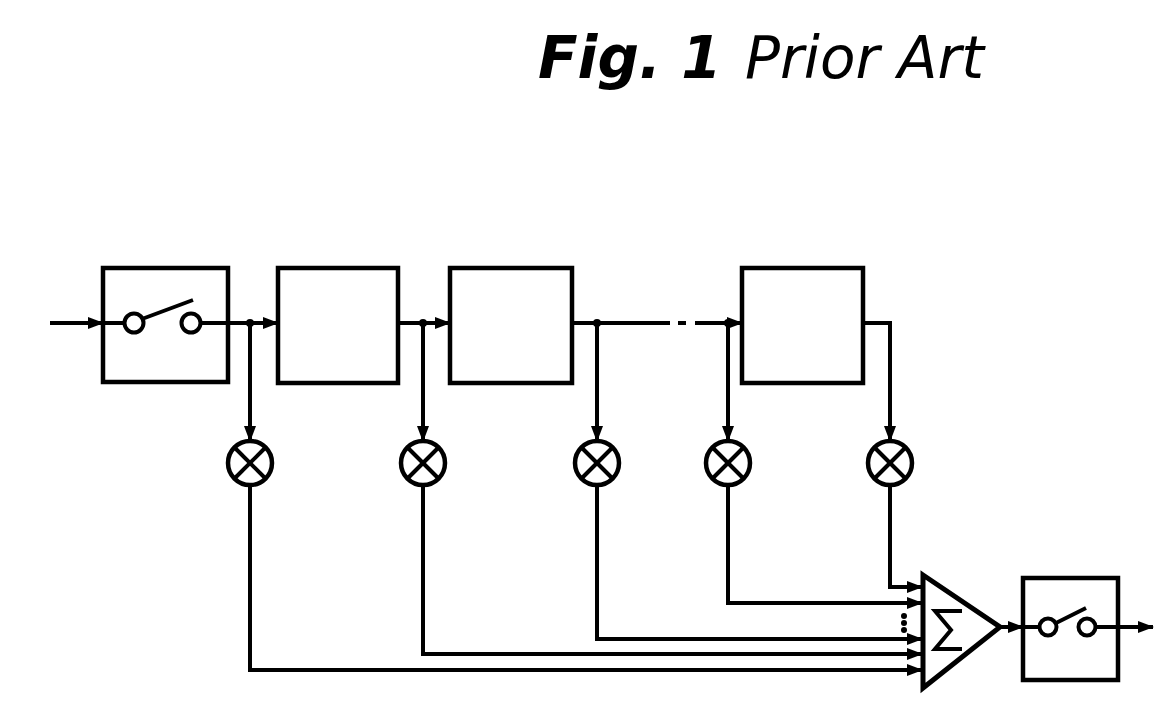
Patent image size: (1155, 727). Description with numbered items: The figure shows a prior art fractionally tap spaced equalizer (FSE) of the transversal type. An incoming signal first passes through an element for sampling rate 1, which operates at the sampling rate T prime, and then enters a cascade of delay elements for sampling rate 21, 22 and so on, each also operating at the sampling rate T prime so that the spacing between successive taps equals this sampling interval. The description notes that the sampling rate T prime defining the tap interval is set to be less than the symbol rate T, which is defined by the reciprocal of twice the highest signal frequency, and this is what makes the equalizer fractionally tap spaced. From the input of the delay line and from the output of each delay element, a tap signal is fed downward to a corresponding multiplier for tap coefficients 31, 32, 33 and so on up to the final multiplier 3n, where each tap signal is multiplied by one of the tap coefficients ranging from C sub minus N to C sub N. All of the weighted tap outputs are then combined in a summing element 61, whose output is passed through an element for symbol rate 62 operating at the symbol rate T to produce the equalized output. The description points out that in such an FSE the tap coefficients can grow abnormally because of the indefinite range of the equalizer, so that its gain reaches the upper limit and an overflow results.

The element for sampling rate 1 is at (201, 268).
The delay element for sampling rate 21 is at (368, 268).
The delay element for sampling rate 22 is at (542, 268).
The multiplier for tap coefficient 31 is at (298, 452).
The multiplier for tap coefficient 32 is at (471, 452).
The multiplier for tap coefficient 33 is at (644, 452).
The multiplier for tap coefficient 3n is at (936, 452).
The summing element 61 is at (964, 597).
The element for symbol rate 62 is at (1086, 578).